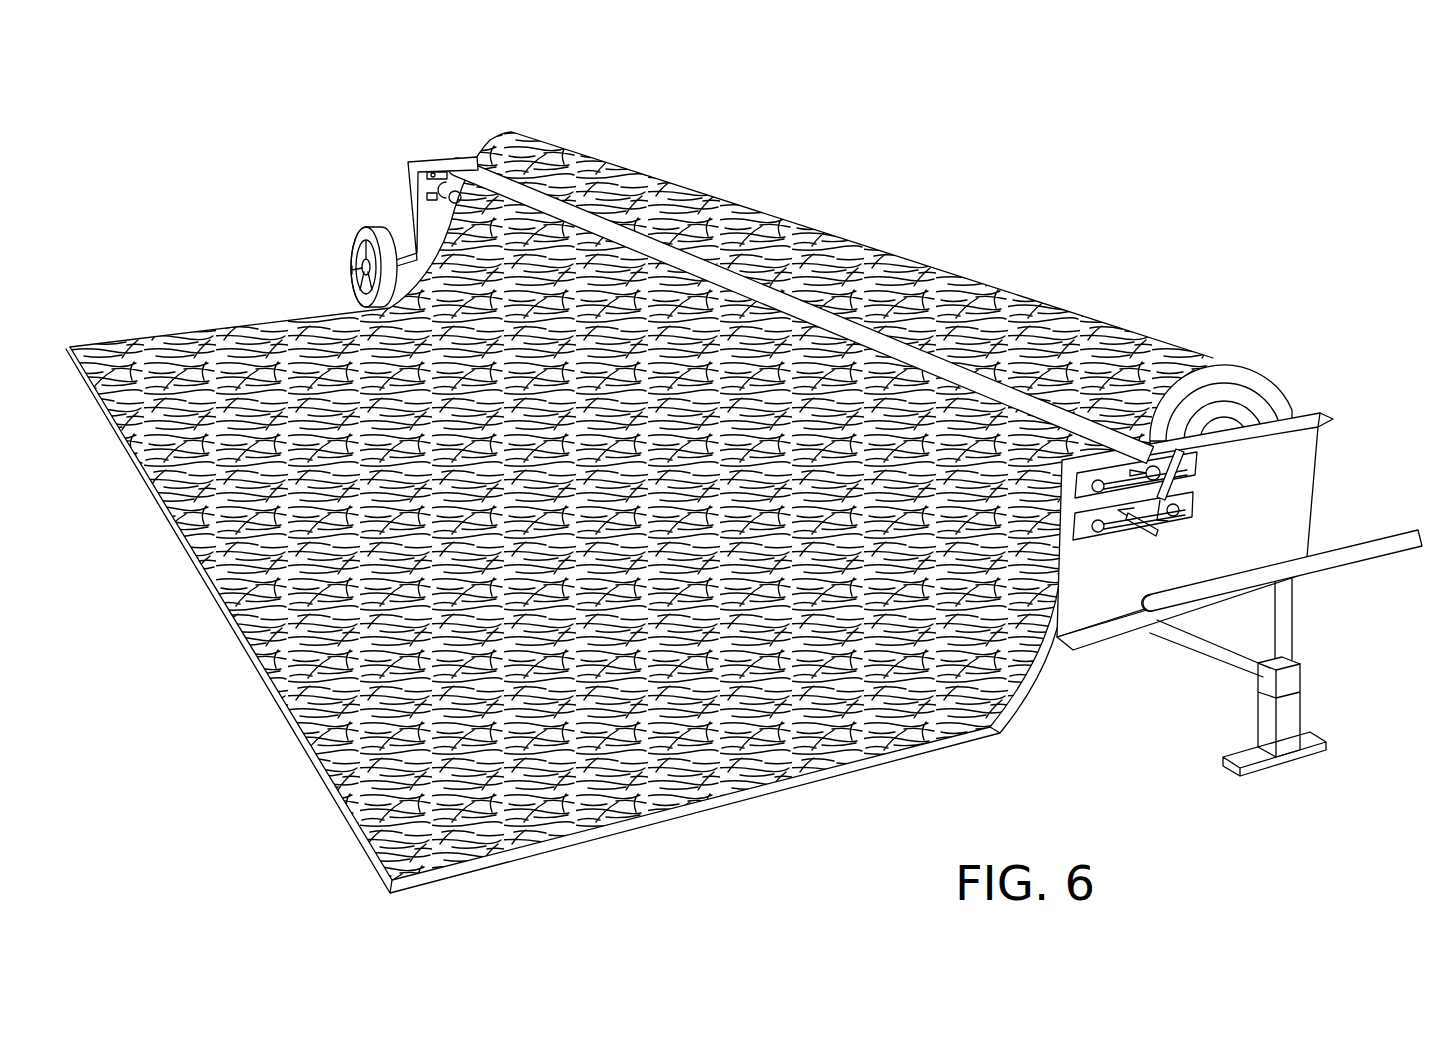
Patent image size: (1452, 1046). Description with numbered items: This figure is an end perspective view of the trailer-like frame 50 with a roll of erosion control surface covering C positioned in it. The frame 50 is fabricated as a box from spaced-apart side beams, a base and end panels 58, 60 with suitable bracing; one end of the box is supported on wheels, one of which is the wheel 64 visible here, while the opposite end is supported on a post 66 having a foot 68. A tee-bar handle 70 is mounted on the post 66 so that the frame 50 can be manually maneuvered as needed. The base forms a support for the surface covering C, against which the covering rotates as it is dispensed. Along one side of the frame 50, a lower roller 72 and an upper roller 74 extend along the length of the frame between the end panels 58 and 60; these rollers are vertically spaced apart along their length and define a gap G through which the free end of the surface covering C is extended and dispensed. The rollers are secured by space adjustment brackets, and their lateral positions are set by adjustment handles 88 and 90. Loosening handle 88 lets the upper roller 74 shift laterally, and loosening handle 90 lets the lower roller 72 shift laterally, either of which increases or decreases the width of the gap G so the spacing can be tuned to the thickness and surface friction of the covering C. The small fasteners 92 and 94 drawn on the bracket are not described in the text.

The frame 50 is at (868, 430).
The end panel 58 is at (1300, 485).
The end panel 60 is at (430, 165).
The wheel 64 is at (358, 275).
The post 66 is at (1290, 730).
The foot 68 is at (1236, 762).
The tee-bar handle 70 is at (1365, 548).
The lower roller 72 is at (440, 177).
The upper roller 74 is at (478, 160).
The adjustment handle 88 is at (1178, 470).
The adjustment handle 90 is at (1112, 522).
The fastener 92 is at (1130, 477).
The fastener bolt 94 is at (1098, 490).
The surface covering C is at (768, 225).
The gap G is at (450, 198).